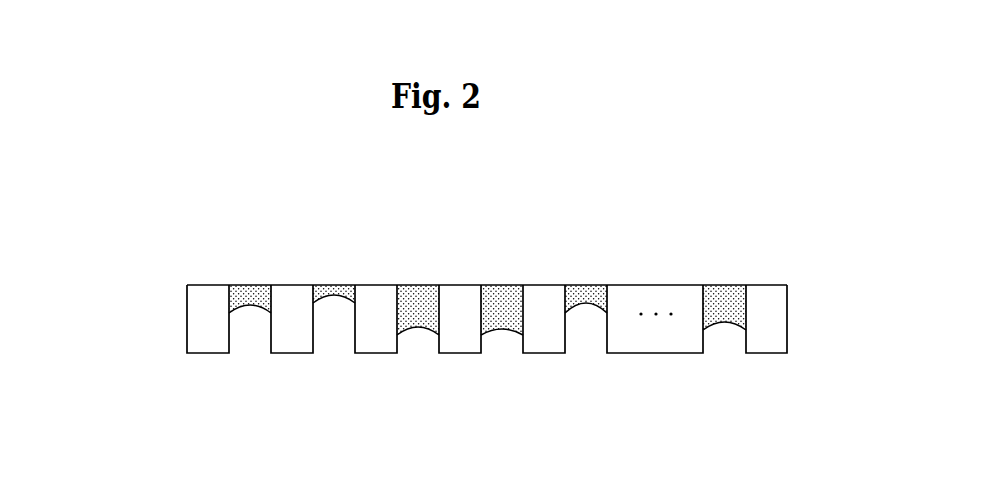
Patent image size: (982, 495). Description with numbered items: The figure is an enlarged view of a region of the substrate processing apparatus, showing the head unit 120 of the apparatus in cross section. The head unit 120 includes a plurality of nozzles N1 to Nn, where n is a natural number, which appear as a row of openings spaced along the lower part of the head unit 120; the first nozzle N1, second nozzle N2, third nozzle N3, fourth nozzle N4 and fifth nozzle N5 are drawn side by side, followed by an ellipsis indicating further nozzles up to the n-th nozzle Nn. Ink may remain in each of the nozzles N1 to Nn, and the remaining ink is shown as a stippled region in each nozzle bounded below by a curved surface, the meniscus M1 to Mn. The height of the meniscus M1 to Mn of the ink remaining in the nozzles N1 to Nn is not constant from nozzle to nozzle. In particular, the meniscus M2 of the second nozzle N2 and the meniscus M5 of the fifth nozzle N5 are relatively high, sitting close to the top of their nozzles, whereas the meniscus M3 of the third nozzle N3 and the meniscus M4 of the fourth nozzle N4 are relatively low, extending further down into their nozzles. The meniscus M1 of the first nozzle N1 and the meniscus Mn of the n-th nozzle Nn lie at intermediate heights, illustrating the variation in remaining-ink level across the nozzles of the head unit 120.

The head unit 120 is at (172, 313).
The first nozzle N1 is at (250, 256).
The second nozzle N2 is at (334, 256).
The third nozzle N3 is at (418, 256).
The fourth nozzle N4 is at (503, 256).
The fifth nozzle N5 is at (586, 256).
The n-th nozzle Nn is at (724, 256).
The meniscus M1 is at (252, 308).
The meniscus of the second nozzle M2 is at (338, 298).
The meniscus of the third nozzle M3 is at (420, 330).
The meniscus of the fourth nozzle M4 is at (504, 332).
The meniscus of the fifth nozzle M5 is at (588, 306).
The meniscus of the n-th nozzle Mn is at (726, 325).